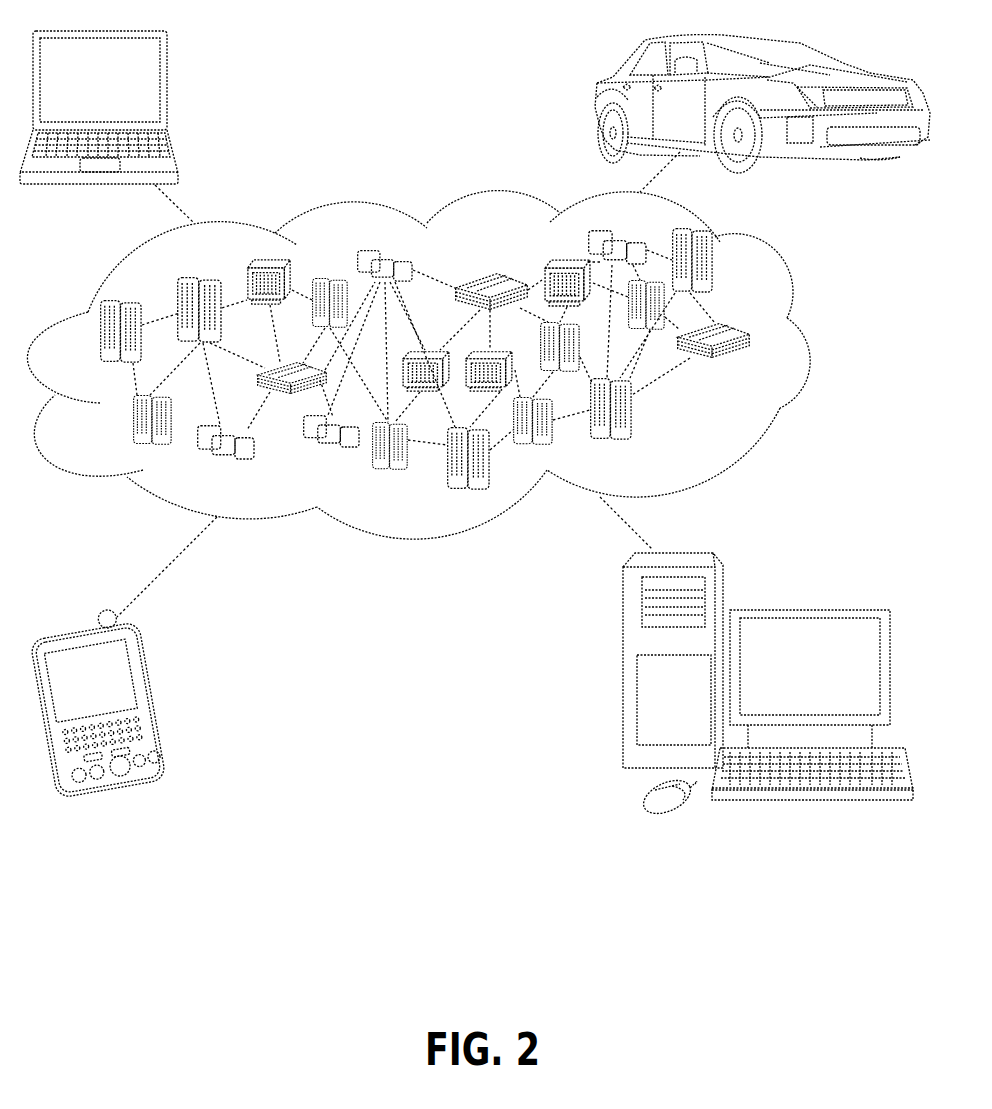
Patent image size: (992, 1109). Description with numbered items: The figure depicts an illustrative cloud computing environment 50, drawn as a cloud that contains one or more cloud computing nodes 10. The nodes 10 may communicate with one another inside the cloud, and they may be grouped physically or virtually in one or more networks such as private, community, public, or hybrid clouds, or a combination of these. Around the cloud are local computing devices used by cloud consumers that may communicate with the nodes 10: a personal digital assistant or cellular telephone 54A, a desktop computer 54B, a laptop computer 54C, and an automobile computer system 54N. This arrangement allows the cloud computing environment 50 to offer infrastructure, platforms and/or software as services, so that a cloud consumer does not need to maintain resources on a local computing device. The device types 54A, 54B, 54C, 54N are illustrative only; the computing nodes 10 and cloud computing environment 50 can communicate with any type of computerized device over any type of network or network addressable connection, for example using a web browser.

The cloud computing nodes 10 is at (751, 369).
The cloud computing environment 50 is at (807, 340).
The personal digital assistant or cellular telephone 54A is at (157, 697).
The desktop computer 54B is at (808, 610).
The laptop computer 54C is at (168, 88).
The automobile computer system 54N is at (594, 101).